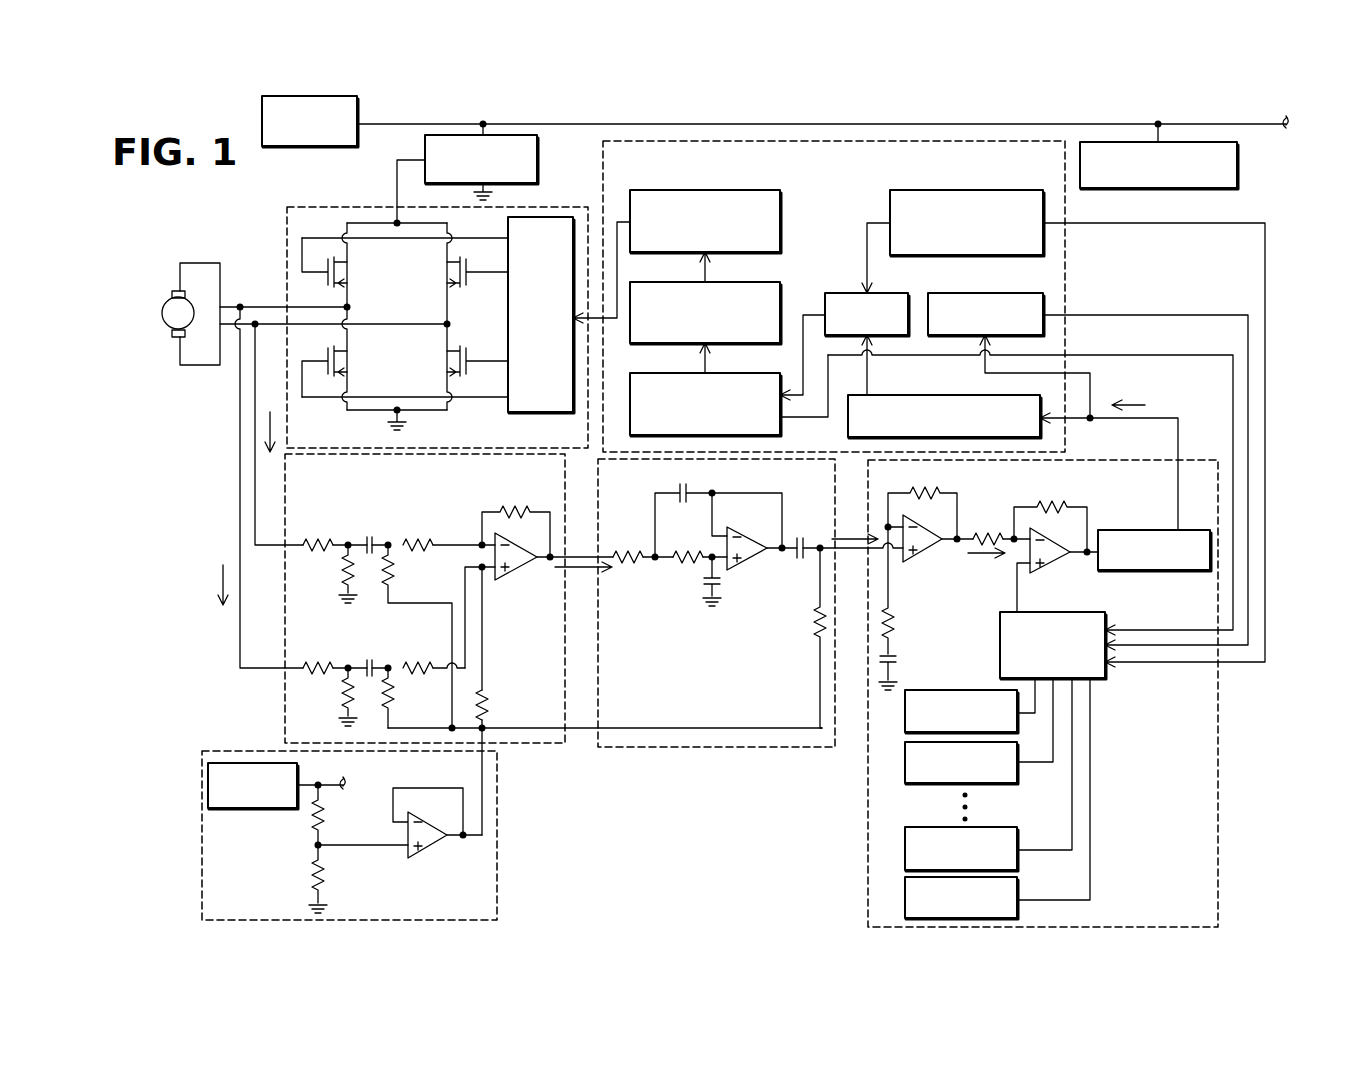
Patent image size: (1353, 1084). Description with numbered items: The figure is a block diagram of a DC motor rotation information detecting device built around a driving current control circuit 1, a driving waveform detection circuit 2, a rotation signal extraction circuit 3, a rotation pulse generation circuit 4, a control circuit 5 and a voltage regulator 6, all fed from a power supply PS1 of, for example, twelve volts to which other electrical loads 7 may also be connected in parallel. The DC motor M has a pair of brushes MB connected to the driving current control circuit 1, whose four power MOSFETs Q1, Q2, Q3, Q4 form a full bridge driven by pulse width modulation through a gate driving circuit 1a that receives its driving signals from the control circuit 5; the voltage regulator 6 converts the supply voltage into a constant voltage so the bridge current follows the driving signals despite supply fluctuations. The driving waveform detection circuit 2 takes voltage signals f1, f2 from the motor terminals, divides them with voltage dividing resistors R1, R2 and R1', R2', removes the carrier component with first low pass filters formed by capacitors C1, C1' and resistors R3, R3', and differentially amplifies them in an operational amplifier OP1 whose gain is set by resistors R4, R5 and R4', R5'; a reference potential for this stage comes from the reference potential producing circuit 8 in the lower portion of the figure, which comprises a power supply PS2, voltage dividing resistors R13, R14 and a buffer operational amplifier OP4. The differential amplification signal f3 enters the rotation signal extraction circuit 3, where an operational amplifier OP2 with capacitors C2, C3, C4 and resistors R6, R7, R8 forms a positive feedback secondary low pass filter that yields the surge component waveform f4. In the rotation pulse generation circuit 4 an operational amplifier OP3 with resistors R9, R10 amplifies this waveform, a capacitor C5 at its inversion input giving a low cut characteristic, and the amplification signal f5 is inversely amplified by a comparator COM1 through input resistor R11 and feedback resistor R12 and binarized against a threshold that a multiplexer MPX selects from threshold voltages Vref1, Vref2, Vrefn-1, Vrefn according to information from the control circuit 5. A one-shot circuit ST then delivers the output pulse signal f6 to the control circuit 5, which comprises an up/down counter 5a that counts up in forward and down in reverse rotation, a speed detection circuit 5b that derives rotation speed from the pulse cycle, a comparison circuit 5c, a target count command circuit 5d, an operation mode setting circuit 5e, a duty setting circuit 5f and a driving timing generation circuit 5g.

The driving current control circuit 1 is at (287, 226).
The gate driving circuit 1a is at (538, 217).
The driving waveform detection circuit 2 is at (535, 745).
The rotation signal extraction circuit 3 is at (748, 749).
The rotation pulse generation circuit 4 is at (1219, 829).
The control circuit 5 is at (1066, 262).
The up/down counter 5a is at (998, 398).
The speed detection circuit 5b is at (995, 288).
The comparison circuit 5c is at (912, 296).
The target count command circuit 5d is at (995, 186).
The operation mode setting circuit 5e is at (733, 368).
The duty setting circuit 5f is at (733, 278).
The driving timing generation circuit 5g is at (733, 186).
The voltage regulator 6 is at (539, 160).
The other electrical loads 7 is at (1239, 165).
The reference voltage generating circuit 8 is at (498, 862).
The power supply PS1 is at (307, 149).
The power supply PS2 is at (253, 811).
The DC motor M is at (191, 314).
The brushes MB is at (172, 333).
The power MOSFET Q1 is at (348, 275).
The power MOSFET Q2 is at (472, 336).
The power MOSFET Q3 is at (466, 286).
The power MOSFET Q4 is at (348, 364).
The voltage signal f1 is at (274, 429).
The voltage signal f2 is at (221, 578).
The differential amplification signal f3 is at (582, 575).
The surge component waveform f4 is at (850, 532).
The amplification signal f5 is at (983, 562).
The output signal f6 is at (1135, 404).
The voltage dividing resistor R1 is at (319, 526).
The voltage dividing resistor R2 is at (326, 574).
The resistor R3 is at (417, 636).
The resistor R4 is at (418, 526).
The resistor R5 is at (508, 519).
The voltage dividing resistor R1' is at (321, 649).
The voltage dividing resistor R2' is at (325, 697).
The resistor R3' is at (415, 698).
The resistor R4' is at (420, 649).
The resistor R5' is at (507, 705).
The resistor R6 is at (625, 545).
The resistor R7 is at (683, 545).
The resistor R8 is at (816, 626).
The resistor R9 is at (896, 618).
The resistor R10 is at (938, 490).
The input resistor R11 is at (988, 532).
The feedback resistor R12 is at (1052, 498).
The voltage dividing resistor R13 is at (326, 818).
The voltage dividing resistor R14 is at (326, 875).
The capacitor C1 is at (362, 527).
The capacitor C1' is at (363, 650).
The capacitor C2 is at (680, 487).
The capacitor C3 is at (702, 594).
The capacitor C4 is at (803, 538).
The capacitor C5 is at (898, 656).
The operational amplifier OP1 is at (518, 581).
The operational amplifier OP2 is at (752, 574).
The operational amplifier OP3 is at (928, 562).
The operational amplifier OP4 is at (432, 862).
The comparator COM1 is at (1058, 574).
The one-shot circuit ST is at (1150, 573).
The multiplexer MPX is at (1053, 645).
The threshold voltage Vref1 is at (961, 711).
The threshold voltage Vref2 is at (961, 763).
The threshold voltage Vrefn-1 is at (961, 849).
The threshold voltage Vrefn is at (961, 898).